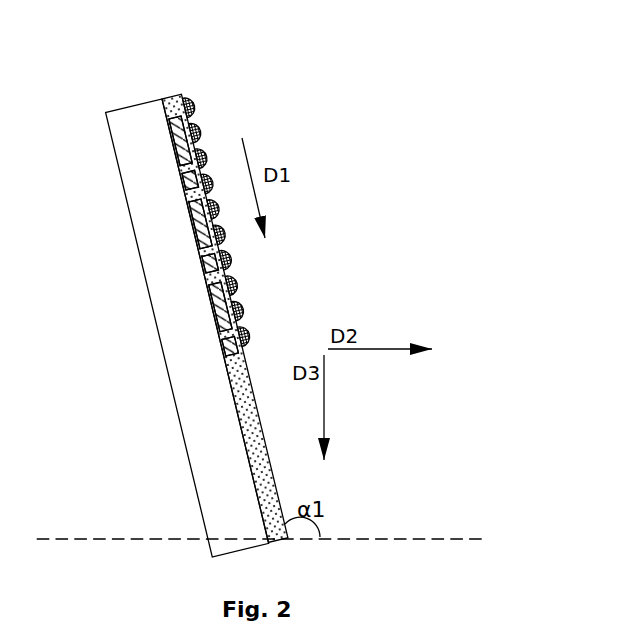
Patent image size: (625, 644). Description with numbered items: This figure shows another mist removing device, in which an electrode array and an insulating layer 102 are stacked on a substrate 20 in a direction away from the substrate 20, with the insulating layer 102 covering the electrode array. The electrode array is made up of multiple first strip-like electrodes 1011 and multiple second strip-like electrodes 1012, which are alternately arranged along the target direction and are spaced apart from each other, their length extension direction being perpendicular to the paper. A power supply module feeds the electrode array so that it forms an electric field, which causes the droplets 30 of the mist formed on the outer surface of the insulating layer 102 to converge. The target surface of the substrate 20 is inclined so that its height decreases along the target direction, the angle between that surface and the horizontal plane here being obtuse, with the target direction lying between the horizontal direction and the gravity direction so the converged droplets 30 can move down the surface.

The substrate 20 is at (117, 113).
The insulating layer 102 is at (166, 100).
The droplets 30 is at (197, 108).
The first strip-like electrode 1011 is at (174, 152).
The second strip-like electrode 1012 is at (181, 190).